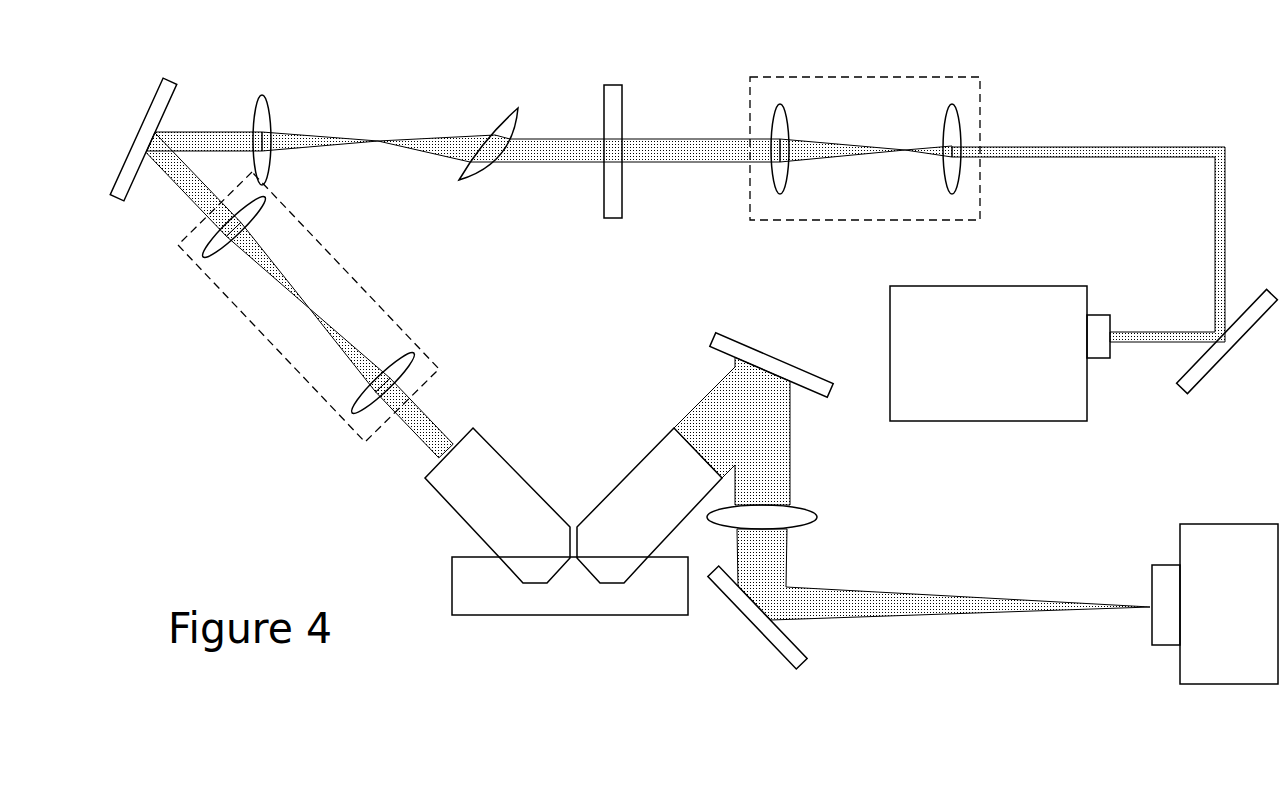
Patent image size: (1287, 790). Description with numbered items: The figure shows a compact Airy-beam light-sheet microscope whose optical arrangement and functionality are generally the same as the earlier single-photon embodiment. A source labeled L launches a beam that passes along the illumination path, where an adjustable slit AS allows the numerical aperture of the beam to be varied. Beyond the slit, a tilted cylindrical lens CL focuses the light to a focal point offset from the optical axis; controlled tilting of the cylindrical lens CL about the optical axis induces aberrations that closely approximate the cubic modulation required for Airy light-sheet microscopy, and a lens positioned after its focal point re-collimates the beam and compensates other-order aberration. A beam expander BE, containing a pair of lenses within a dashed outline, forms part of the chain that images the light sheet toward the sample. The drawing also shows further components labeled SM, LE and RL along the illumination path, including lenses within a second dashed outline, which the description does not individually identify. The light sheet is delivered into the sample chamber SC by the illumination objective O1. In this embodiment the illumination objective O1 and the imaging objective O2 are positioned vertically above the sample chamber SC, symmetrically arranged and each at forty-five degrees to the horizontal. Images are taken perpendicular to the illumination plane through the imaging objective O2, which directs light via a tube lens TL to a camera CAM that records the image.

The scanning mirror SM is at (146, 126).
The lens LE is at (262, 126).
The tilted cylindrical lens CL is at (494, 129).
The adjustable slit AS is at (615, 136).
The beam expander BE is at (865, 134).
The relay lens RL is at (308, 307).
The illumination objective O1 is at (497, 505).
The imaging objective O2 is at (649, 505).
The sample chamber SC is at (570, 602).
The tube lens TL is at (779, 518).
The laser L is at (1000, 353).
The camera CAM is at (1215, 620).